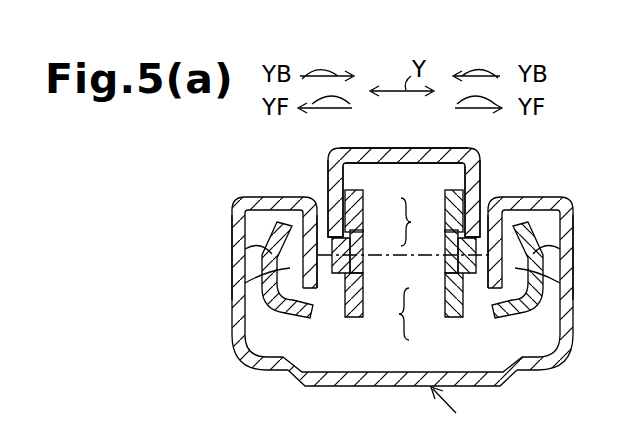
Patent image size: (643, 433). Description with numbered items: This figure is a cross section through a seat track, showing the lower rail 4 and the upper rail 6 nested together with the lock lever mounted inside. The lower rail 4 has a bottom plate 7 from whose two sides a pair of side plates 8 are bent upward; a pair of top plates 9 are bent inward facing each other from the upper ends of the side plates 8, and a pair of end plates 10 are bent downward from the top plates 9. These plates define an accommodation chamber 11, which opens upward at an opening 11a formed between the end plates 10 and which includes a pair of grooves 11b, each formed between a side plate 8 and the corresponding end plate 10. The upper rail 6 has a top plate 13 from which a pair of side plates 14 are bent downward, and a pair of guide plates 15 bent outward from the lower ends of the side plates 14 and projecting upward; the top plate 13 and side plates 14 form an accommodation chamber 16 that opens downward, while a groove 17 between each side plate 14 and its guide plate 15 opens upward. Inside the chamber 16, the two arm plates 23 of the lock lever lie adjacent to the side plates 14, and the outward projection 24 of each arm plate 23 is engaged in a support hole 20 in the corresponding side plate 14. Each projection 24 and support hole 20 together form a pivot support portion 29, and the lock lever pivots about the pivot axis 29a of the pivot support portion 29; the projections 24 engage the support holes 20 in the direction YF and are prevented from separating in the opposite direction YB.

The lower rail 4 is at (452, 410).
The upper rail 6 is at (437, 138).
The bottom plate 7 is at (372, 386).
The side plates 8 is at (234, 275).
The top plates 9 is at (272, 198).
The end plates 10 is at (290, 271).
The accommodation chamber 11 is at (402, 386).
The opening 11a is at (321, 212).
The grooves 11b is at (244, 199).
The top plate 13 is at (380, 148).
The side plates 14 is at (331, 177).
The guide plates 15 is at (245, 250).
The accommodation chamber 16 is at (405, 150).
The groove 17 is at (302, 320).
The support hole 20 is at (360, 215).
The arm plates 23 is at (355, 318).
The projection 24 is at (358, 241).
The pivot support portion 29 is at (406, 269).
The pivot axis 29a is at (372, 260).